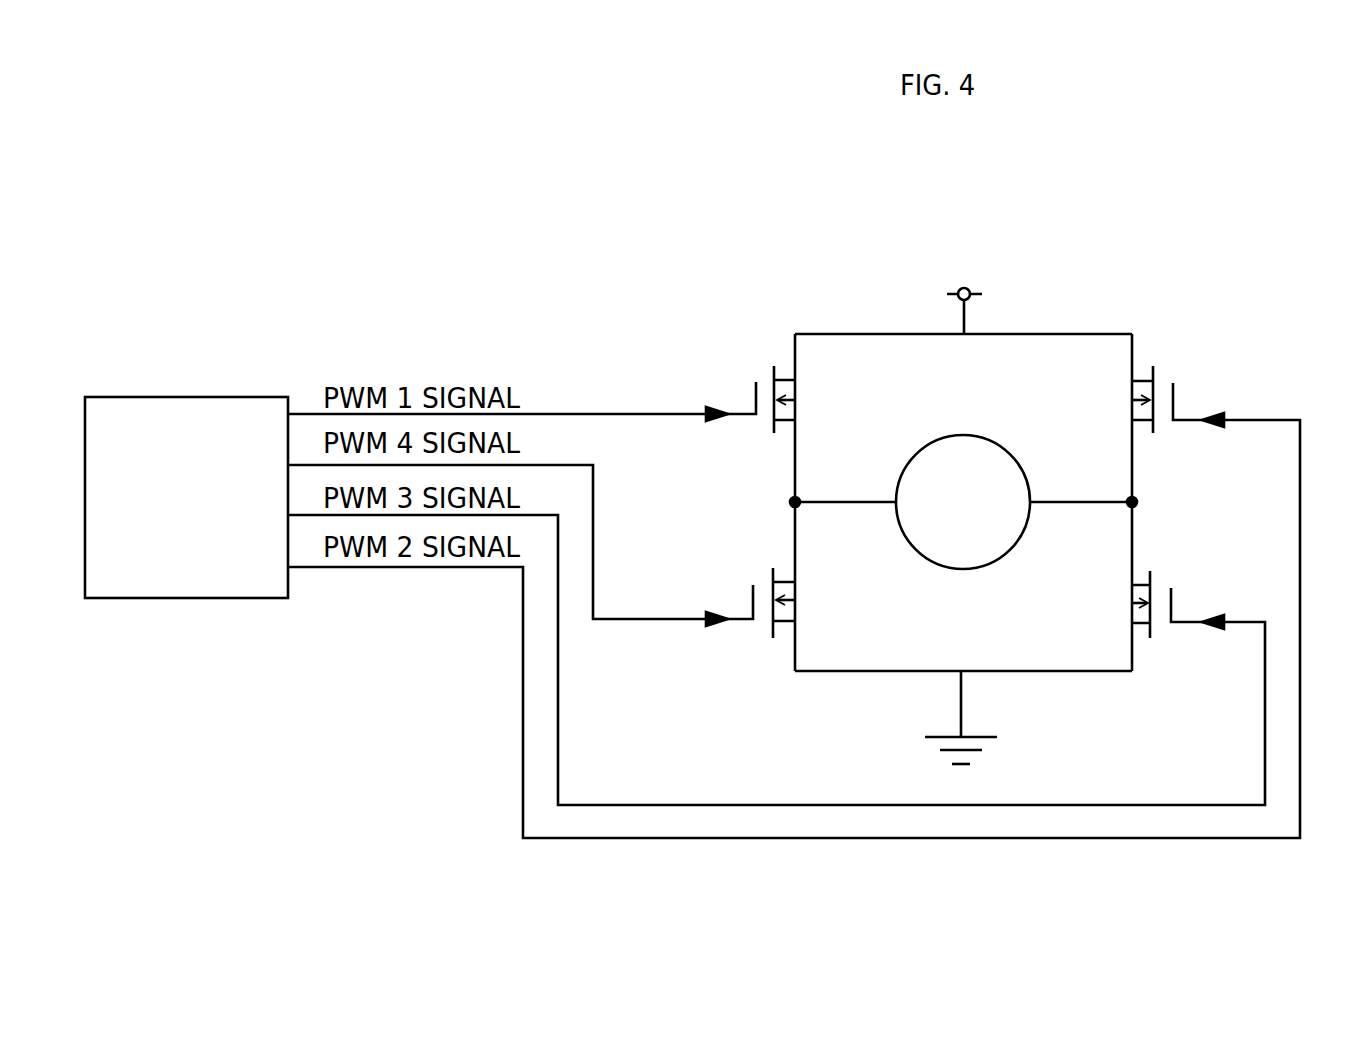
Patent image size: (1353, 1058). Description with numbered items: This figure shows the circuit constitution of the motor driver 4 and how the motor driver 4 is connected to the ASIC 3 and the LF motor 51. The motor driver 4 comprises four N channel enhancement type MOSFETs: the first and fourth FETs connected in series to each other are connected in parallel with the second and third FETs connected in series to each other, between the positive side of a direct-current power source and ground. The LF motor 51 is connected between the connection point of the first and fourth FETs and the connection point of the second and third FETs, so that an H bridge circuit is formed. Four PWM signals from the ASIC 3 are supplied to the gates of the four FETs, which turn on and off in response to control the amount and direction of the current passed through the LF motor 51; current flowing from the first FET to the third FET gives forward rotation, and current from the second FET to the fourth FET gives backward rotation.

The ASIC 3 is at (187, 396).
The motor driver 4 is at (1139, 298).
The LF motor 51 is at (963, 435).